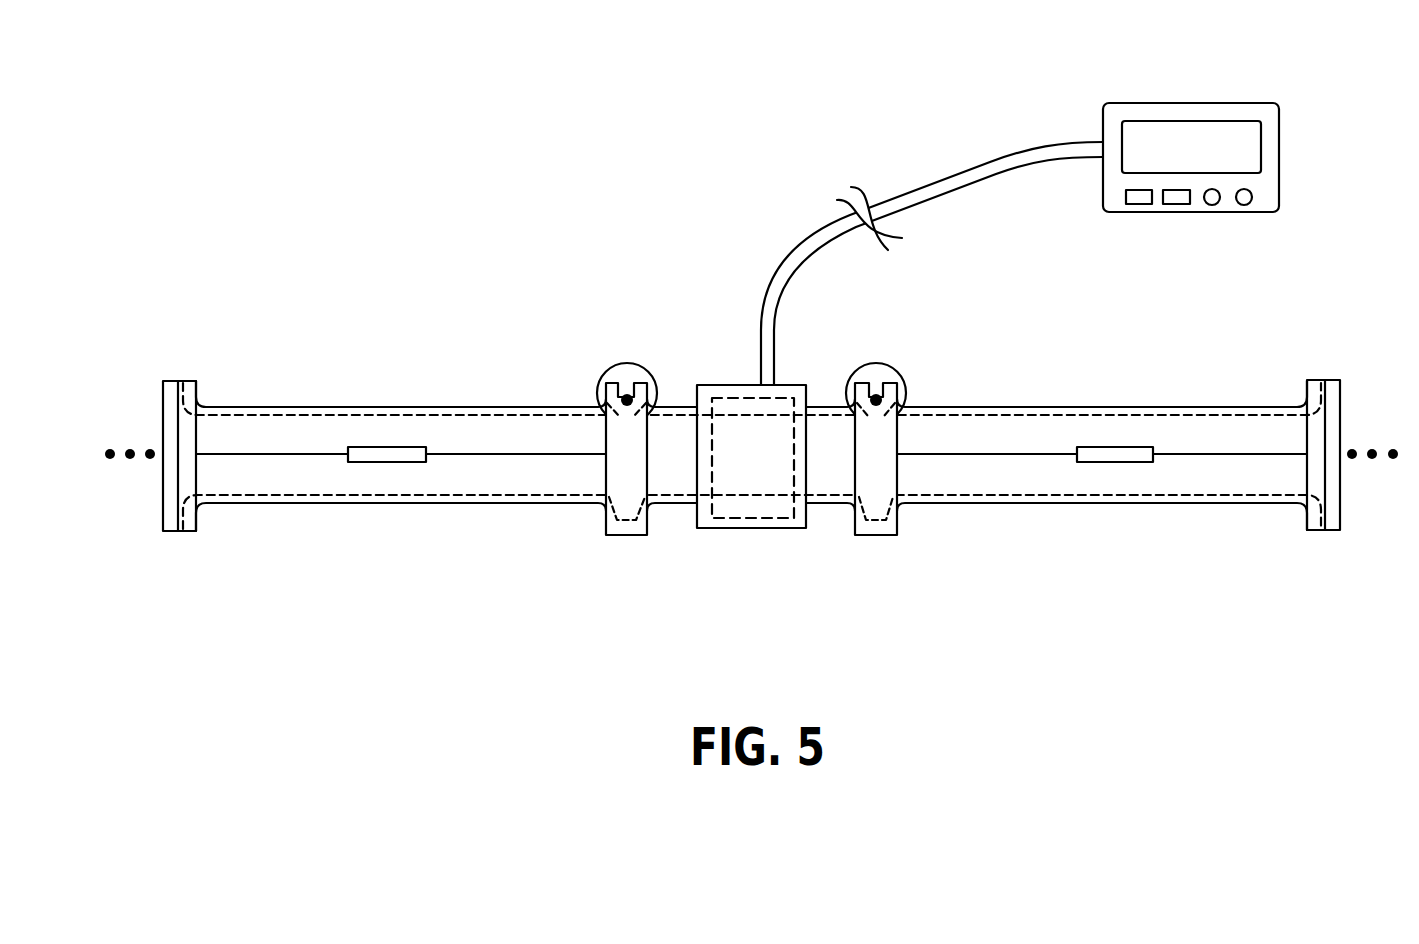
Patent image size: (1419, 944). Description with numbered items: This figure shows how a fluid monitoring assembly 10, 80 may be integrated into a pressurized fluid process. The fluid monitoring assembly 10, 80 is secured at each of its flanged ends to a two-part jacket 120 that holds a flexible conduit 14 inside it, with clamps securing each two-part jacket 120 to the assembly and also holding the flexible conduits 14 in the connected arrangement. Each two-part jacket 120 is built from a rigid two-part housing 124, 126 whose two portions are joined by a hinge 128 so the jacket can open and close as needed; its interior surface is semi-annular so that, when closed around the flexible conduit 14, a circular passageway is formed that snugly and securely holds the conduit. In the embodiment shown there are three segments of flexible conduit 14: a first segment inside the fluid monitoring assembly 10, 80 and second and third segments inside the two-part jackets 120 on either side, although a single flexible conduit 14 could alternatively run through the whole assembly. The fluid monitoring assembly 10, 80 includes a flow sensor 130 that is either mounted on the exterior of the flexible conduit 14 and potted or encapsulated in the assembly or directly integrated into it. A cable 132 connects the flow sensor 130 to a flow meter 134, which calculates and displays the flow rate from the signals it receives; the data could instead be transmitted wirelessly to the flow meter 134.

The fluid monitoring assembly 10 is at (751, 350).
The fluid monitoring assembly 80 is at (751, 350).
The flexible conduit 14 is at (163, 400).
The two-part jacket 120 is at (400, 505).
The two-part housing 124 is at (287, 430).
The two-part housing 126 is at (257, 475).
The hinge 128 is at (390, 452).
The flow sensor 130 is at (730, 407).
The cable 132 is at (943, 187).
The flow meter 134 is at (1205, 103).